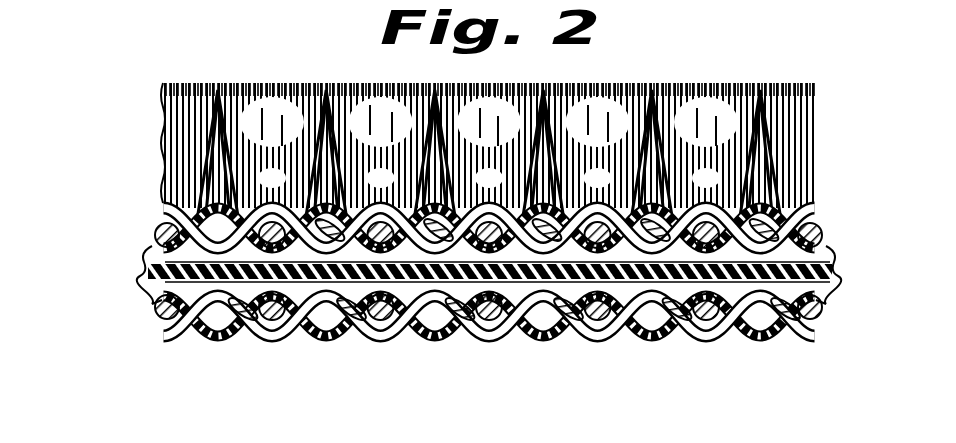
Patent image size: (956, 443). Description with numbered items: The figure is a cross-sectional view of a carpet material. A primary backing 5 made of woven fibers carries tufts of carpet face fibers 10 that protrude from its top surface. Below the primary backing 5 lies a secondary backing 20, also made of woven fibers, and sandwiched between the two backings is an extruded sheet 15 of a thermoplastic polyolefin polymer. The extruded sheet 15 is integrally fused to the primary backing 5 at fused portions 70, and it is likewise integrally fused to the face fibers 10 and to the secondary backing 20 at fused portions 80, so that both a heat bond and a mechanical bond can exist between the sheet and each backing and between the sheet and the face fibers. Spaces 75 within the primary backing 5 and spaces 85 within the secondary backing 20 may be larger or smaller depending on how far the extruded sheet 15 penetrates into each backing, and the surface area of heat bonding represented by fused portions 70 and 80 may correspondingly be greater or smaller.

The tufts of carpet face fibers 10 is at (163, 92).
The primary backing 5 is at (163, 226).
The extruded sheet 15 is at (145, 271).
The secondary backing 20 is at (160, 315).
The fused portions 70 is at (176, 302).
The spaces 75 is at (442, 258).
The fused portions 80 is at (600, 300).
The spaces 85 is at (558, 290).